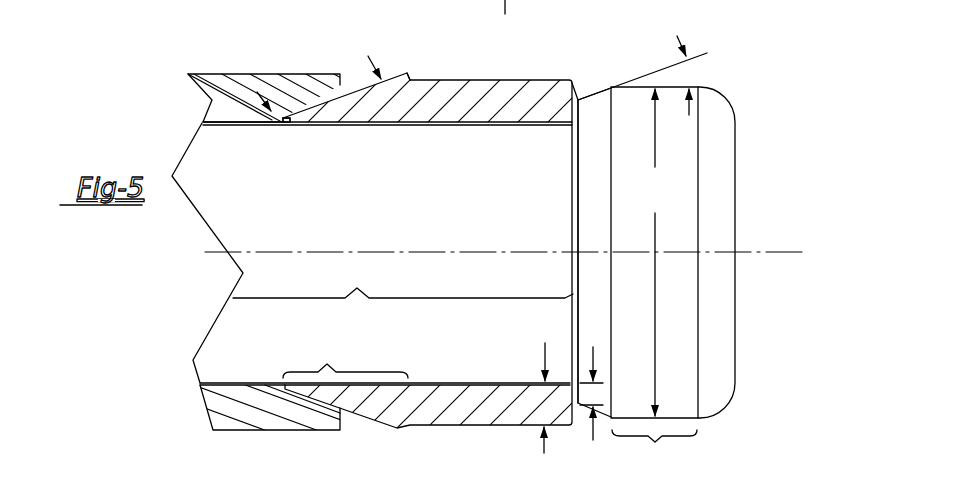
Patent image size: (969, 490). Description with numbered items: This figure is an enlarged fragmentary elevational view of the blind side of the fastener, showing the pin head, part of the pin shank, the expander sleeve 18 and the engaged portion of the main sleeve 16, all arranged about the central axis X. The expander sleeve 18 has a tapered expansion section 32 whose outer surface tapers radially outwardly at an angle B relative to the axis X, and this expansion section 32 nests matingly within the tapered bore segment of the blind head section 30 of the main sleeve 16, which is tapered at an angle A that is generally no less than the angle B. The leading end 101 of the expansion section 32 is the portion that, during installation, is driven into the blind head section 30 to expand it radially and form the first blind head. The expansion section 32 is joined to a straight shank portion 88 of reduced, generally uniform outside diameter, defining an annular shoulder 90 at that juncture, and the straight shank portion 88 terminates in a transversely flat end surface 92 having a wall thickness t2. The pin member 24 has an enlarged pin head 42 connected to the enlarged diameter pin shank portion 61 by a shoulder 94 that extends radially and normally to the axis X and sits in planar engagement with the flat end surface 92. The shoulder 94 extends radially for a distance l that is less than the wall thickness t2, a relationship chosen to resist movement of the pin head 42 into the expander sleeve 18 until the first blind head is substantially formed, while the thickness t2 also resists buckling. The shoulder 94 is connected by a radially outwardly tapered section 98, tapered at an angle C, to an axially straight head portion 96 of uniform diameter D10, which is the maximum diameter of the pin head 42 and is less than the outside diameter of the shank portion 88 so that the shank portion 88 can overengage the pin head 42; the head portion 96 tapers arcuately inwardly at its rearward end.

The main sleeve 16 is at (203, 413).
The expander sleeve 18 is at (422, 428).
The pin member 24 is at (228, 321).
The blind head section 30 is at (340, 62).
The expansion section 32 is at (345, 357).
The pin head 42 is at (705, 165).
The enlarged diameter pin shank portion 61 is at (403, 280).
The straight shank portion 88 is at (599, 201).
The annular shoulder 90 is at (412, 80).
The end surface 92 is at (586, 89).
The shoulder 94 is at (576, 193).
The head portion 96 is at (654, 449).
The tapered section 98 is at (606, 100).
The leading end 101 is at (295, 113).
The taper angle A is at (278, 127).
The taper angle B is at (390, 127).
The taper angle C is at (679, 113).
The diameter D10 is at (657, 252).
The radial distance l is at (591, 399).
The wall thickness t2 is at (557, 403).
The central axis X is at (505, 254).